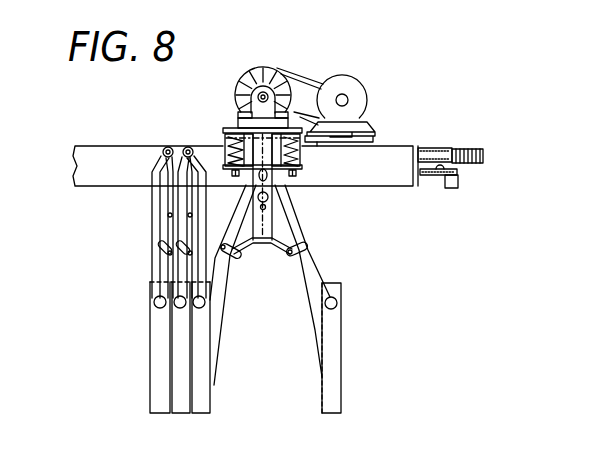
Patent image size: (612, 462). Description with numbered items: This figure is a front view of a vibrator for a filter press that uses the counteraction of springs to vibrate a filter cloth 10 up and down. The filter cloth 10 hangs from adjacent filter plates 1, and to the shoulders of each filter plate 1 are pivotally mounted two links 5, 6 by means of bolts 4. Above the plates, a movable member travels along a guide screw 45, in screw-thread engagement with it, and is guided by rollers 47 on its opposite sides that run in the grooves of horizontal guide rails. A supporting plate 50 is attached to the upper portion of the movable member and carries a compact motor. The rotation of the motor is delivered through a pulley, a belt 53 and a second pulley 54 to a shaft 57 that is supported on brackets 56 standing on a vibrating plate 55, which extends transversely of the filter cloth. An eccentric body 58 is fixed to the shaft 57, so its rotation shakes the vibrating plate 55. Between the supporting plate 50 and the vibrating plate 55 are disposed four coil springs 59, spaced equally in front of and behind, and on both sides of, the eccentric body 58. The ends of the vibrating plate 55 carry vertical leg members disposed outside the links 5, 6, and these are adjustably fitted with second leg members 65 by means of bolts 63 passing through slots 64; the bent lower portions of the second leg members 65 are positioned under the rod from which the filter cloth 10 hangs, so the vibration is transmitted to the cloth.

The filter plate 1 is at (341, 331).
The bolt 4 is at (338, 303).
The link 5 is at (318, 265).
The link 6 is at (232, 218).
The filter cloth 10 is at (226, 313).
The guide screw 45 is at (478, 148).
The roller 47 is at (448, 188).
The supporting plate 50 is at (300, 165).
The belt 53 is at (307, 83).
The pulley 54 is at (352, 83).
The vibrating plate 55 is at (235, 130).
The bracket 56 is at (235, 92).
The shaft 57 is at (265, 92).
The eccentric body 58 is at (253, 78).
The coil spring 59 is at (233, 148).
The bolt 63 is at (272, 196).
The slot 64 is at (298, 213).
The second leg member 65 is at (263, 243).